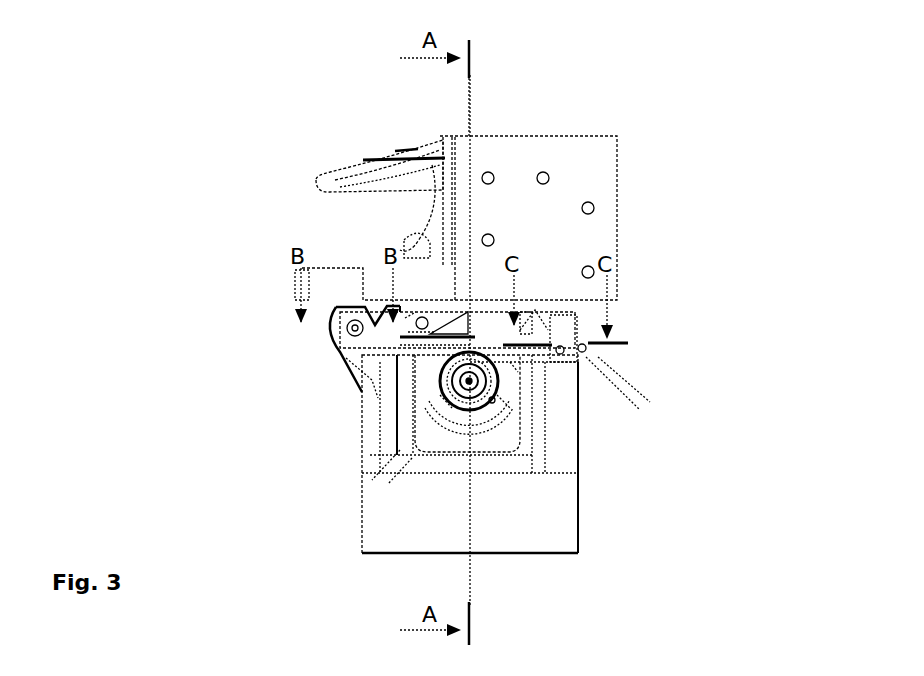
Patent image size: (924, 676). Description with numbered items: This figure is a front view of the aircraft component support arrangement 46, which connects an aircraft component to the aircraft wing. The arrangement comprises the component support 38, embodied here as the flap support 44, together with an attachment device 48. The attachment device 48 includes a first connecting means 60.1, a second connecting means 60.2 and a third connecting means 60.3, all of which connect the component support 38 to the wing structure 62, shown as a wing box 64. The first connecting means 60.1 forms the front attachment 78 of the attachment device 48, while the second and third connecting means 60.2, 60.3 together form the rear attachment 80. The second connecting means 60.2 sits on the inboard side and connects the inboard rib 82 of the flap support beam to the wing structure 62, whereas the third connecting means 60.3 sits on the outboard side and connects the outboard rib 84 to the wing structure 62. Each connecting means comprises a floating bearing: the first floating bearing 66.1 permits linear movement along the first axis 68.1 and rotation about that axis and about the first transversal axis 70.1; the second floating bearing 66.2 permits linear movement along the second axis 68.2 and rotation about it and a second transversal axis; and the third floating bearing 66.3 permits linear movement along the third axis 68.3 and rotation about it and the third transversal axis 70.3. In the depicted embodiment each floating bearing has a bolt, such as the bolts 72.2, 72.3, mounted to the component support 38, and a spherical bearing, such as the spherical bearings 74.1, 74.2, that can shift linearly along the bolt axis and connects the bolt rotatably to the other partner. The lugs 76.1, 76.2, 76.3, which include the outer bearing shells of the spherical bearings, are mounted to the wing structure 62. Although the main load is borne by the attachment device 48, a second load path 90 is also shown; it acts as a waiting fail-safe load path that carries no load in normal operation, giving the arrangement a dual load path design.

The component support 38 is at (532, 520).
The flap support 44 is at (479, 414).
The aircraft component support arrangement 46 is at (183, 128).
The attachment device 48 is at (386, 426).
The first connecting means 60.1 is at (450, 420).
The second connecting means 60.2 is at (327, 328).
The third connecting means 60.3 is at (632, 318).
The wing structure 62 is at (618, 252).
The wing box 64 is at (622, 182).
The first floating bearing 66.1 is at (494, 402).
The second floating bearing 66.2 is at (326, 337).
The third floating bearing 66.3 is at (632, 346).
The first axis 68.1 is at (398, 452).
The second axis 68.2 is at (333, 352).
The third axis 68.3 is at (600, 363).
The first transversal axis 70.1 is at (474, 96).
The third transversal axis 70.3 is at (592, 380).
The bolt 72.2 is at (350, 320).
The bolt 72.3 is at (614, 340).
The spherical bearing 74.1 is at (466, 406).
The spherical bearing 74.2 is at (332, 306).
The lug 76.1 is at (501, 399).
The lug 76.2 is at (331, 312).
The lug 76.3 is at (609, 322).
The front attachment 78 is at (472, 448).
The rear attachment 80 is at (688, 305).
The inboard rib 82 is at (390, 436).
The outboard rib 84 is at (518, 365).
The second load path 90 is at (408, 217).